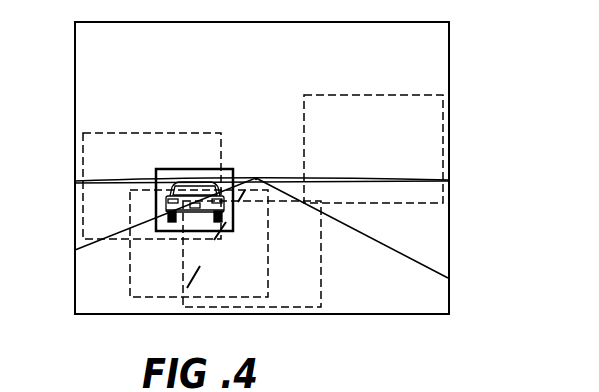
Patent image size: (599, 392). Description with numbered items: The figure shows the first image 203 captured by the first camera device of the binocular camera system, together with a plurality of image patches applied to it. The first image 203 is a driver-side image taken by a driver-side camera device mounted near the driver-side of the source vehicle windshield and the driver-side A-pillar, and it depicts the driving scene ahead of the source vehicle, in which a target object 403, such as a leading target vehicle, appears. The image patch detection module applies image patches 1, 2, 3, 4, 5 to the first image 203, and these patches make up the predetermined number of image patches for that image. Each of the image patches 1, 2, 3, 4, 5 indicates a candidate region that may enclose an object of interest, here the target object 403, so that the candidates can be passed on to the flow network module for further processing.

The image patch 1 is at (159, 133).
The image patch 2 is at (130, 258).
The image patch 3 is at (255, 191).
The image patch 4 is at (298, 307).
The image patch 5 is at (383, 203).
The first image 203 is at (449, 153).
The target object 403 is at (155, 197).